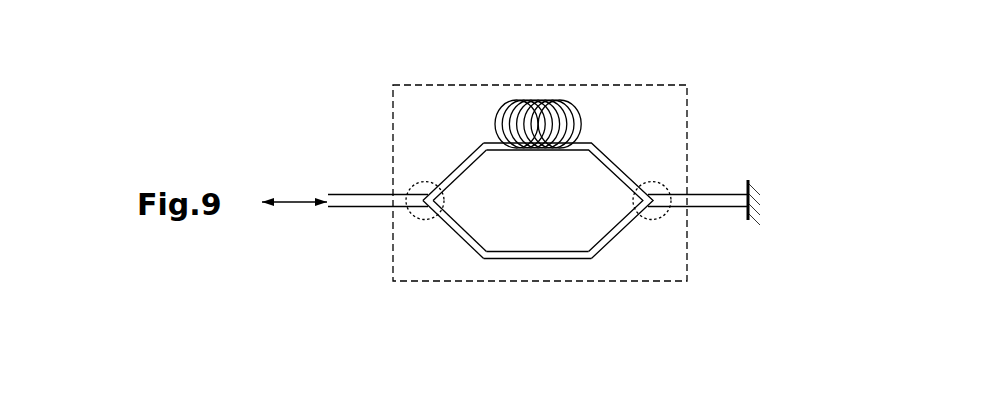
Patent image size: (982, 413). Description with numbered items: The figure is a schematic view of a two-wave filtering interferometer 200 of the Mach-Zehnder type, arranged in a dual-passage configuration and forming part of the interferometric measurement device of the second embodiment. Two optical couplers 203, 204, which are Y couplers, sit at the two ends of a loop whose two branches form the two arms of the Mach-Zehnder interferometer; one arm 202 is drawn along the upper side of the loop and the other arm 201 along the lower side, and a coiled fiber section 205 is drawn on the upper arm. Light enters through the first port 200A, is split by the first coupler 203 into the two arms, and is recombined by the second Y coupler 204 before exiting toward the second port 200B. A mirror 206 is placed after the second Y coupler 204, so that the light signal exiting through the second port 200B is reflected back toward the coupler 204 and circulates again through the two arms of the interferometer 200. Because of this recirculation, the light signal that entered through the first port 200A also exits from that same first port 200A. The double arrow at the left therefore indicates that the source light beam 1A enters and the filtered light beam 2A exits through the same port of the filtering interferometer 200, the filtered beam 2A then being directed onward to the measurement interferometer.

The filtering interferometer 200 is at (645, 82).
The first port 200A is at (370, 193).
The second port 200B is at (703, 193).
The lower beam of frame 201 is at (540, 259).
The upper beam of frame 202 is at (473, 155).
The optical coupler 203 is at (425, 219).
The second Y coupler 204 is at (652, 219).
The coil spring / resonant element 205 is at (581, 119).
The mirror 206 is at (747, 222).
The source light beam 1A is at (307, 199).
The filtered light beam 2A is at (302, 205).